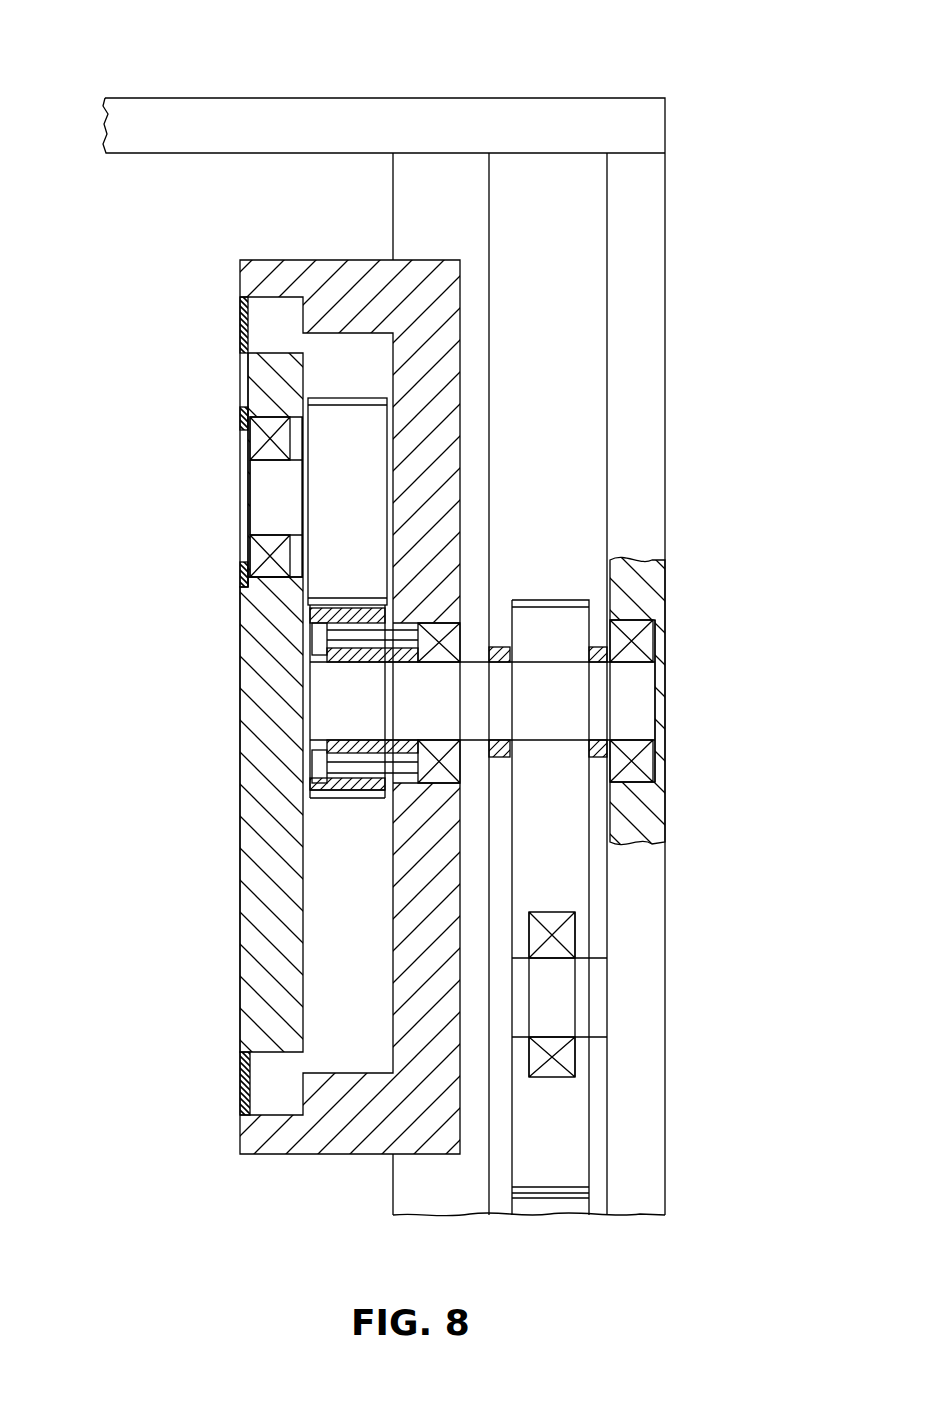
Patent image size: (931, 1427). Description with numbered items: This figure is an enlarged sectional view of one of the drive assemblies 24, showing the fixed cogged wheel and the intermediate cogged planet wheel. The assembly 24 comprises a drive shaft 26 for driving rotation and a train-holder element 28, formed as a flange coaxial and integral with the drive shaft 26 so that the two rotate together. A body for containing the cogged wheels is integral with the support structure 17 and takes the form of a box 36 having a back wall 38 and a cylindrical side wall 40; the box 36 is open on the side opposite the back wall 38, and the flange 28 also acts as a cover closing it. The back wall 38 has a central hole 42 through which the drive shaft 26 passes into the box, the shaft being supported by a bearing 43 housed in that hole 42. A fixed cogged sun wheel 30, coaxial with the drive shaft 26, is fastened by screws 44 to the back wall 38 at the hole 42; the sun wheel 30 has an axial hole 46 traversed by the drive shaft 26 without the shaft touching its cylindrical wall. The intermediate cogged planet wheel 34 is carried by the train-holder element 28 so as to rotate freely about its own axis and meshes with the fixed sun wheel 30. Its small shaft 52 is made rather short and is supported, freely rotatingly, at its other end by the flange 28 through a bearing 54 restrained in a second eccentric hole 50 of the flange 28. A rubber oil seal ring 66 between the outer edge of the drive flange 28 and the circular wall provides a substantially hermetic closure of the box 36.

The support structure 17 is at (538, 116).
The assembly 24 is at (221, 314).
The drive shaft 26 is at (471, 690).
The train-holder element 28 is at (282, 922).
The fixed cogged sun wheel 30 is at (357, 790).
The intermediate cogged planet wheel 34 is at (363, 437).
The box 36 is at (297, 247).
The back wall 38 is at (441, 364).
The cylindrical side wall 40 is at (319, 1118).
The central hole 42 is at (433, 625).
The bearing 43 is at (443, 627).
The screws 44 is at (315, 635).
The axial hole 46 is at (333, 667).
The second hole 50 is at (275, 578).
The small shaft 52 is at (262, 495).
The bearing 54 is at (257, 442).
The rubber oil seal ring 66 is at (243, 1082).